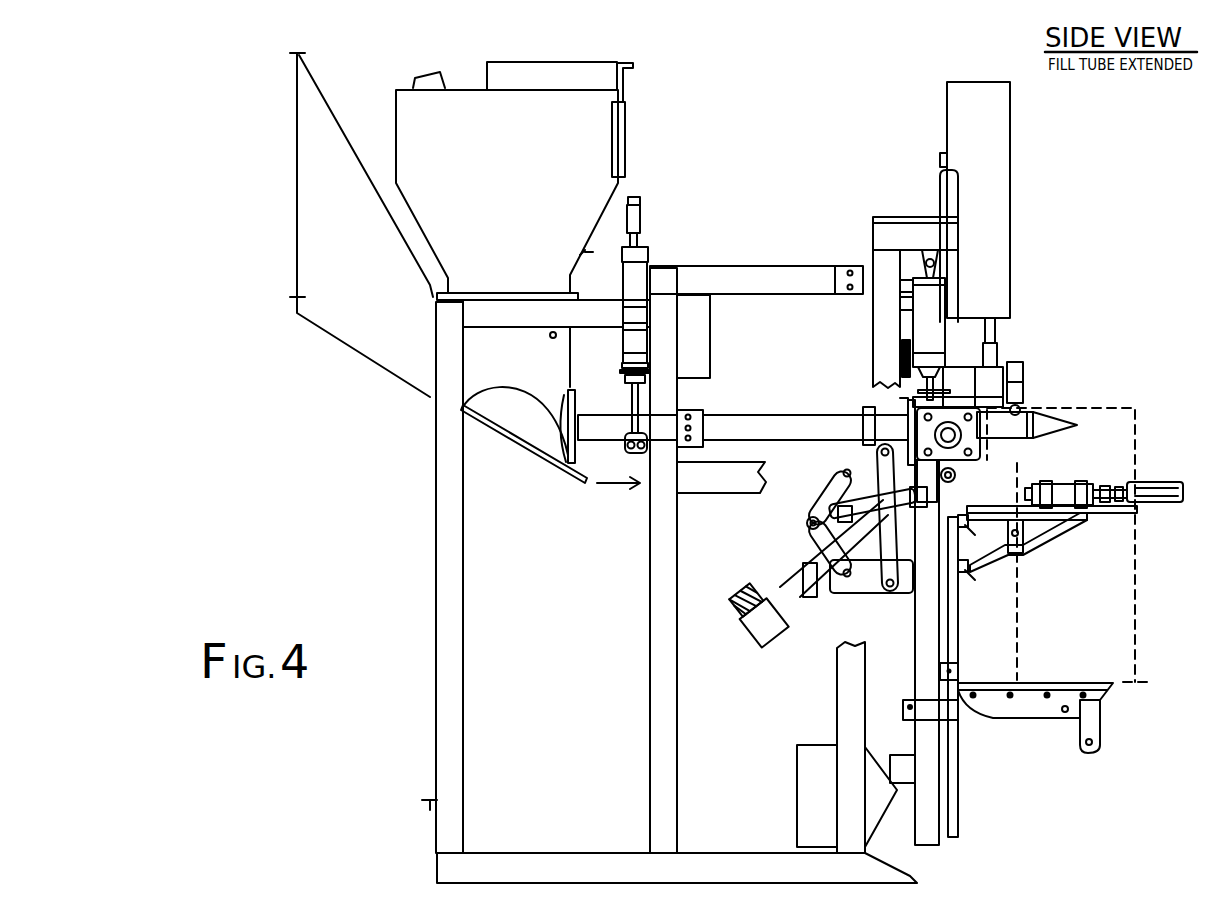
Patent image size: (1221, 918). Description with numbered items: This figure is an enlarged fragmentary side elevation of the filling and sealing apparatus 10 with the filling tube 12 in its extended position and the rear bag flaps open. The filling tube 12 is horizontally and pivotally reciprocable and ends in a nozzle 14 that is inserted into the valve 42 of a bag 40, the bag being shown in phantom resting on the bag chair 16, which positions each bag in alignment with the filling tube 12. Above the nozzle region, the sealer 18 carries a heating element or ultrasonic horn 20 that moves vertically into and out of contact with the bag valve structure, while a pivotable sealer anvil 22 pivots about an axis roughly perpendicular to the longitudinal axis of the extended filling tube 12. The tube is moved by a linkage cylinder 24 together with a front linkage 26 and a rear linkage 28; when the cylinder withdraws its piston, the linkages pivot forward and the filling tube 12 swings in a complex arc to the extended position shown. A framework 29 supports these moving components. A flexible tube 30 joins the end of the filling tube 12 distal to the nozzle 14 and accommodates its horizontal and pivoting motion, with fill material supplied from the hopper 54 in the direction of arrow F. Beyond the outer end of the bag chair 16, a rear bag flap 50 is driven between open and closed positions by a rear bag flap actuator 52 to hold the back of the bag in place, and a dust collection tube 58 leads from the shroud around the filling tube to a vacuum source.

The filling and sealing apparatus 10 is at (739, 118).
The filling tube 12 is at (1036, 460).
The nozzle 14 is at (1057, 423).
The bag chair 16 is at (1018, 708).
The sealer 18 is at (995, 205).
The heating element or ultrasonic horn 20 is at (993, 353).
The pivotable sealer anvil 22 is at (957, 477).
The linkage cylinder 24 is at (868, 508).
The front linkage 26 is at (893, 553).
The rear linkage 28 is at (822, 537).
The framework 29 is at (760, 287).
The flexible tube 30 is at (753, 427).
The bag 40 is at (1123, 578).
The valve 42 is at (1020, 480).
The rear bag flap 50 is at (1203, 494).
The rear bag flap actuator 52 is at (1093, 490).
The hopper 54 is at (525, 194).
The dust collection tube 58 is at (763, 622).